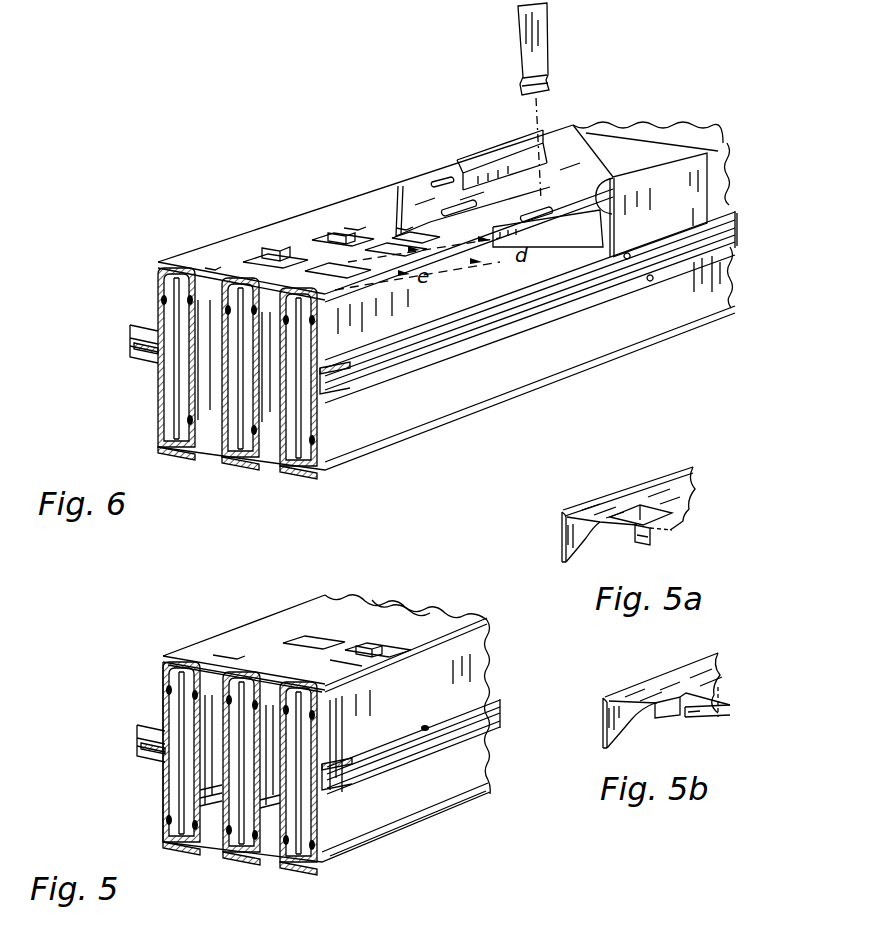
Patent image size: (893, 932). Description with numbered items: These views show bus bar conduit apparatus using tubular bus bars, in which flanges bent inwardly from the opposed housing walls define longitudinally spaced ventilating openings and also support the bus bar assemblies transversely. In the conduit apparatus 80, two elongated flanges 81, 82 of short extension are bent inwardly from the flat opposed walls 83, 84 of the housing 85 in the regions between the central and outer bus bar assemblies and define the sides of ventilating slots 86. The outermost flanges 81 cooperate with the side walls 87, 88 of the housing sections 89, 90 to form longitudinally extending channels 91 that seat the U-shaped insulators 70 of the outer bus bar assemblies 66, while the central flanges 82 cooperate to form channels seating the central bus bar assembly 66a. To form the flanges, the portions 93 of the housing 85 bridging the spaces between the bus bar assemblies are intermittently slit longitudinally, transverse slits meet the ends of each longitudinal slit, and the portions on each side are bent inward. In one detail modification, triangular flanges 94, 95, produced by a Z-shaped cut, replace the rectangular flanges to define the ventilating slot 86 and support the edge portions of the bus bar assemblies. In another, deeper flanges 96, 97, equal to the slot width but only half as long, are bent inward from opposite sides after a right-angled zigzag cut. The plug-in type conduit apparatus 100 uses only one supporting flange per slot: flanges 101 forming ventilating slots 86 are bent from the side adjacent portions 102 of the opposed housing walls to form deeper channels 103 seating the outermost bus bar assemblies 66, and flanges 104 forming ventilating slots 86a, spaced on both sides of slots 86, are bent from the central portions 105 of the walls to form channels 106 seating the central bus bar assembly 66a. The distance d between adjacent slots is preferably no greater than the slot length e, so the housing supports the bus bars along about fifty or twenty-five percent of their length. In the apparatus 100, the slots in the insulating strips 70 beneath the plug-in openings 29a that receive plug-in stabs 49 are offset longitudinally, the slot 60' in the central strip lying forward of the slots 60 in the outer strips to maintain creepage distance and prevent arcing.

In FIG. 6, the plug-in openings 29a is at (596, 192).
In FIG. 6, the plug-in stabs 49 is at (540, 50).
In FIG. 6, the slots in outer insulating strips 60 is at (506, 163).
In FIG. 6, the slot in central insulating strip 60' is at (491, 165).
In FIG. 6, the outer bus bar assemblies 66 is at (300, 348).
In FIG. 5, the outer bus bar assemblies 66 is at (338, 797).
In FIG. 5, the central bus bar assembly 66a is at (240, 770).
In FIG. 6, the U-shaped insulators 70 is at (200, 300).
In FIG. 5, the U-shaped insulators 70 is at (220, 697).
In FIG. 5, the conduit apparatus 80 is at (233, 637).
In FIG. 5, the outermost flanges 81 is at (213, 667).
In FIG. 5, the central flanges 82 is at (312, 671).
In FIG. 5, the flat opposed wall 83 is at (353, 661).
In FIG. 5, the flat opposed wall 84 is at (190, 843).
In FIG. 5, the housing 85 is at (428, 624).
In FIG. 6, the ventilating slots 86 is at (292, 252).
In FIG. 5, the ventilating slots 86 is at (356, 643).
In FIG. 5A, the ventilating slots 86 is at (650, 509).
In FIG. 5B, the ventilating slots 86 is at (694, 698).
In FIG. 6, the ventilating slots 86a is at (350, 228).
In FIG. 5, the side wall 87 is at (164, 680).
In FIG. 5, the side wall 88 is at (165, 776).
In FIG. 5, the housing section 89 is at (262, 637).
In FIG. 5, the housing section 90 is at (423, 820).
In FIG. 5, the longitudinally extending channels 91 is at (164, 666).
In FIG. 5, the bridging portions of housing 93 is at (337, 632).
In FIG. 5A, the triangular flange 94 is at (630, 515).
In FIG. 5A, the triangular flange 95 is at (648, 533).
In FIG. 5B, the deeper flange 96 is at (666, 718).
In FIG. 5B, the deeper flange 97 is at (708, 718).
In FIG. 6, the plug-in conduit apparatus 100 is at (160, 266).
In FIG. 6, the flanges 101 is at (286, 252).
In FIG. 6, the side adjacent portions 102 is at (182, 450).
In FIG. 6, the deeper channels 103 is at (164, 441).
In FIG. 6, the flanges 104 is at (212, 262).
In FIG. 6, the central portions 105 is at (396, 236).
In FIG. 6, the channels 106 is at (218, 290).